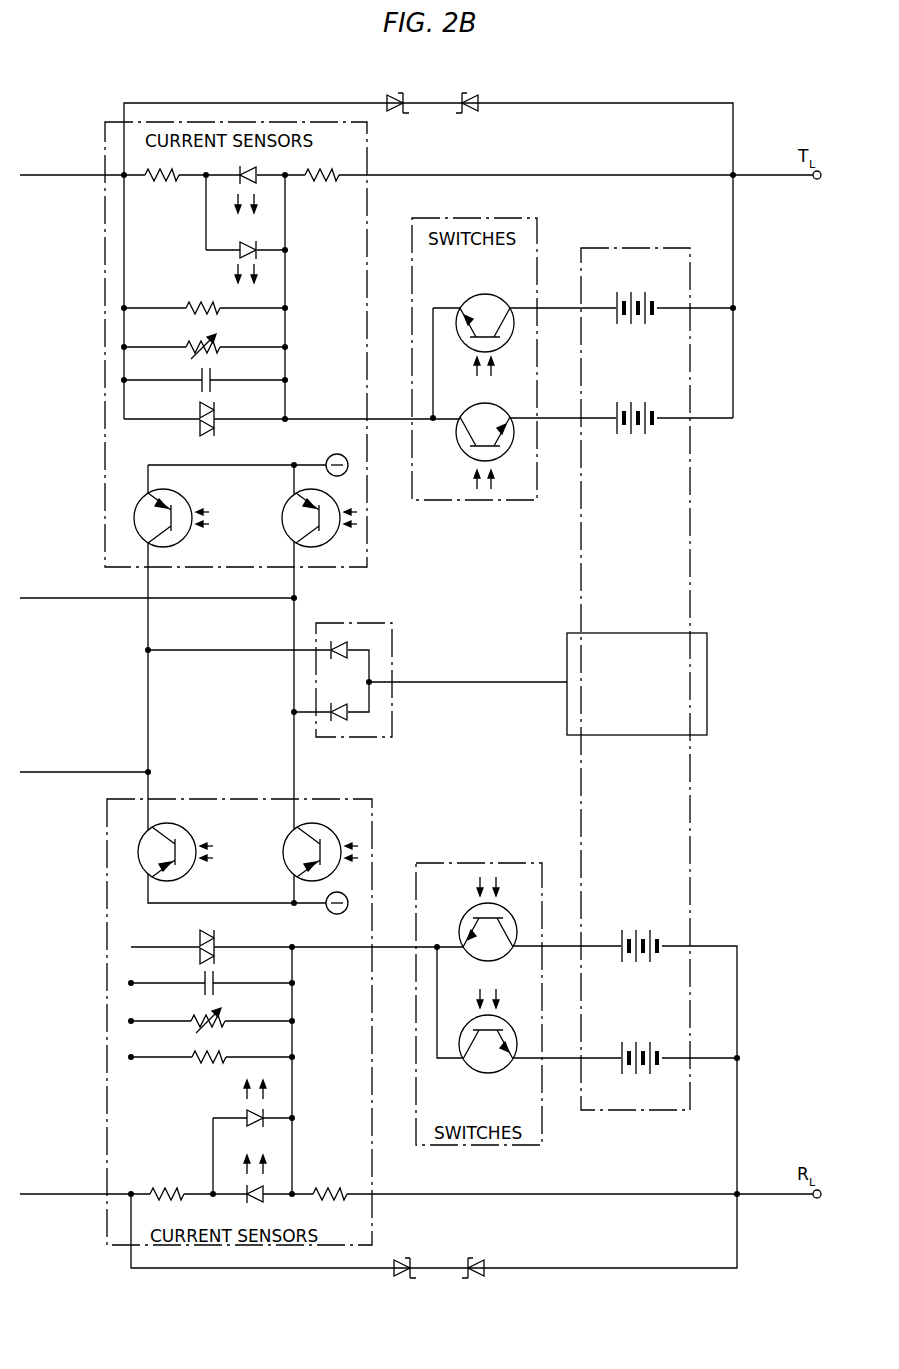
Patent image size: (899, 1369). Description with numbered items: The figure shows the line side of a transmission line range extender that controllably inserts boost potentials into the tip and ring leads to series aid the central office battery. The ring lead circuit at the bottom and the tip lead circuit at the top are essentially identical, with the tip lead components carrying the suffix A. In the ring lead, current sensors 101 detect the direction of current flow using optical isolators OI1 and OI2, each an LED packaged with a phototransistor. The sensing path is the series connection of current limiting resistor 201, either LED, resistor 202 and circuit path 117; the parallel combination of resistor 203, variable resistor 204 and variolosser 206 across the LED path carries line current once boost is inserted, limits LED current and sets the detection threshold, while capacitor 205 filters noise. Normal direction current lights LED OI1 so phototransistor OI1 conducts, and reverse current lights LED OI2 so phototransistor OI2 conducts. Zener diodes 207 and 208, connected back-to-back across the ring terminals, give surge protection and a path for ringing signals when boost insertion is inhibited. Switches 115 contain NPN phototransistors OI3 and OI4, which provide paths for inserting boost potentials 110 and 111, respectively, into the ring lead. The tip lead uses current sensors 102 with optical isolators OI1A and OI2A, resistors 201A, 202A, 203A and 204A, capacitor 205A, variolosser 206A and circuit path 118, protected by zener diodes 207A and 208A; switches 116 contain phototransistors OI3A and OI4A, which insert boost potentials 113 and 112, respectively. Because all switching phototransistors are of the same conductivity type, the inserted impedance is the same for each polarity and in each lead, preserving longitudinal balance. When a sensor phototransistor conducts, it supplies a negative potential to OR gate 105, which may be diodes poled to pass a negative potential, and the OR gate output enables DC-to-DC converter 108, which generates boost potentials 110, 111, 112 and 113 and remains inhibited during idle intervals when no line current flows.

The current sensors 101 is at (107, 886).
The current sensors 102 is at (105, 238).
The OR gate 105 is at (392, 641).
The DC-to-DC converter 108 is at (567, 646).
The boost potential 110 is at (622, 929).
The boost potential 111 is at (622, 1041).
The boost potential 112 is at (617, 402).
The boost potential 113 is at (617, 292).
The switches 115 is at (459, 863).
The switches 116 is at (498, 218).
The circuit path 117 is at (543, 1194).
The circuit path 118 is at (560, 175).
The current limiting resistor 201 is at (165, 1190).
The resistor 202 is at (330, 1190).
The resistor 203 is at (203, 1052).
The variable resistor 204 is at (203, 1015).
The capacitor 205 is at (205, 977).
The variolosser 206 is at (205, 937).
The zener diode 207 is at (402, 1278).
The zener diode 208 is at (476, 1278).
The current limiting resistor 201A is at (165, 186).
The resistor 202A is at (322, 186).
The resistor 203A is at (205, 300).
The variable resistor 204A is at (198, 340).
The capacitor 205A is at (200, 372).
The variolosser 206A is at (200, 410).
The zener diode 207A is at (395, 93).
The zener diode 208A is at (470, 93).
The optical isolator OI1 is at (283, 822).
The optical isolator OI2 is at (185, 873).
The phototransistor OI3 is at (468, 960).
The phototransistor OI4 is at (468, 1072).
The optical isolator OI1A is at (155, 499).
The optical isolator OI2A is at (280, 548).
The phototransistor OI3A is at (484, 294).
The phototransistor OI4A is at (463, 414).